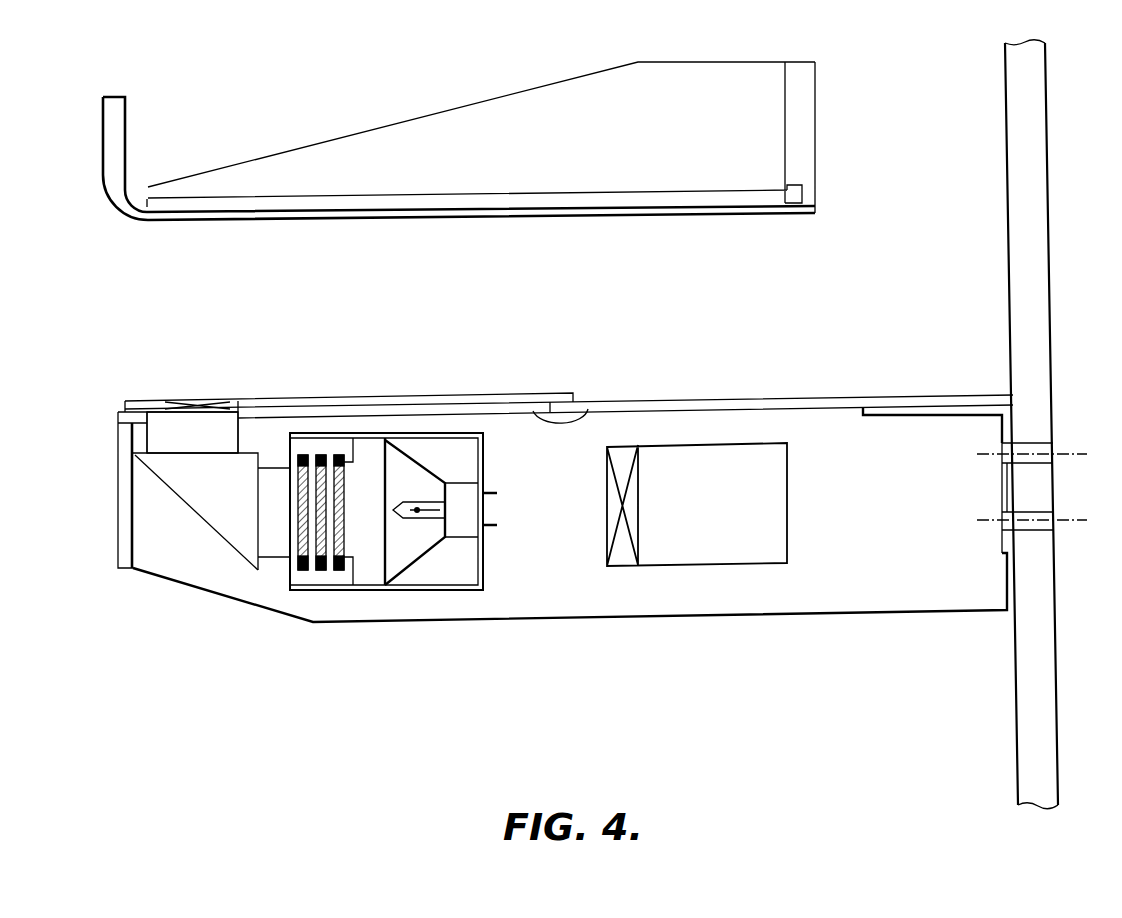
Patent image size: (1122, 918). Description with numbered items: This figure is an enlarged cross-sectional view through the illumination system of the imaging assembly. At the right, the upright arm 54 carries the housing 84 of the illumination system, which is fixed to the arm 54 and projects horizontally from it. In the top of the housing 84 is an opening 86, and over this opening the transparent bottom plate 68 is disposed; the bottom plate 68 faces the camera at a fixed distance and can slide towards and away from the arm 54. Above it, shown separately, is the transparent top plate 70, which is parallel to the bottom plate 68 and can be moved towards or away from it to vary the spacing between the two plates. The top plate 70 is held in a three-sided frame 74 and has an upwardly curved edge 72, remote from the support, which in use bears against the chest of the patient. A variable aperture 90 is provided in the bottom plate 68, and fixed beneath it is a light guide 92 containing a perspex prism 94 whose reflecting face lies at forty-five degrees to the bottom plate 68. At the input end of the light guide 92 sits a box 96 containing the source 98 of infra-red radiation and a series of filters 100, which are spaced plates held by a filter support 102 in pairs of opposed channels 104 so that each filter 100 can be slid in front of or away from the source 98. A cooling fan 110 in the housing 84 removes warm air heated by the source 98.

The arm 54 is at (1038, 281).
The transparent bottom plate 68 is at (452, 394).
The transparent top plate 70 is at (450, 210).
The upwardly curved edge 72 is at (112, 139).
The three-sided frame 74 is at (448, 122).
The housing 84 is at (892, 582).
The opening 86 is at (590, 403).
The variable aperture 90 is at (184, 400).
The light guide 92 is at (162, 436).
The prism 94 is at (222, 522).
The box 96 is at (434, 590).
The source of infra-red radiation 98 is at (417, 512).
The filters 100 is at (328, 515).
The filter support 102 is at (322, 446).
The opposed channels 104 is at (302, 452).
The cooling fan 110 is at (703, 452).